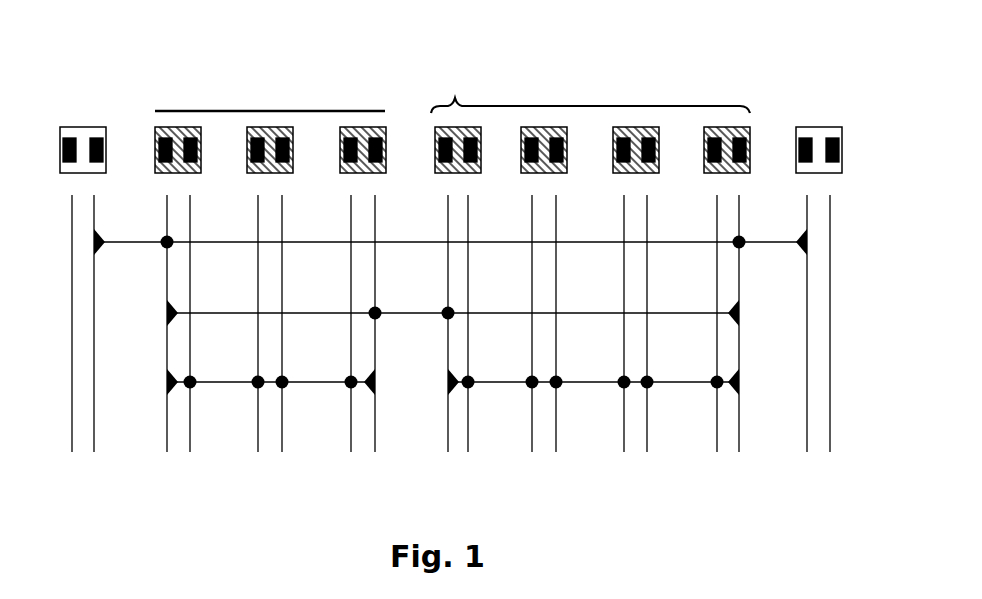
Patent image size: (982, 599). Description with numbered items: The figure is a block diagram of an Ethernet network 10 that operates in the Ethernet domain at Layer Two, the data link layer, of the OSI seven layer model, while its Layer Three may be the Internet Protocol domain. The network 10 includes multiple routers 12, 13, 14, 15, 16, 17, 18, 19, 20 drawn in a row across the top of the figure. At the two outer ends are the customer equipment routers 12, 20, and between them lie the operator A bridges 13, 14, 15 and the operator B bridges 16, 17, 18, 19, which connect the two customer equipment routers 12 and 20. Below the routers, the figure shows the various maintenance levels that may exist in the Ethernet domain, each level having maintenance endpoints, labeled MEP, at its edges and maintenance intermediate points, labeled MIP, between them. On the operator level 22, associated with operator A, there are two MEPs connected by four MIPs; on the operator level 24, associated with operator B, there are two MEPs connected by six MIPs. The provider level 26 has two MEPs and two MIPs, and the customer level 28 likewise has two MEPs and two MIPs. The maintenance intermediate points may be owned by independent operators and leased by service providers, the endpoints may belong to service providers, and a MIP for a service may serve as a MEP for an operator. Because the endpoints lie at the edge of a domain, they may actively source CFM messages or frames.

The Ethernet network 10 is at (423, 54).
The customer equipment router 12 is at (82, 125).
The router 13 is at (188, 175).
The router 14 is at (290, 175).
The router 15 is at (367, 175).
The router 16 is at (463, 175).
The router 17 is at (550, 175).
The router 18 is at (645, 175).
The router 19 is at (728, 175).
The customer equipment router 20 is at (827, 175).
The operator level 22 is at (203, 385).
The operator level 24 is at (657, 385).
The provider level 26 is at (655, 311).
The customer level 28 is at (655, 240).